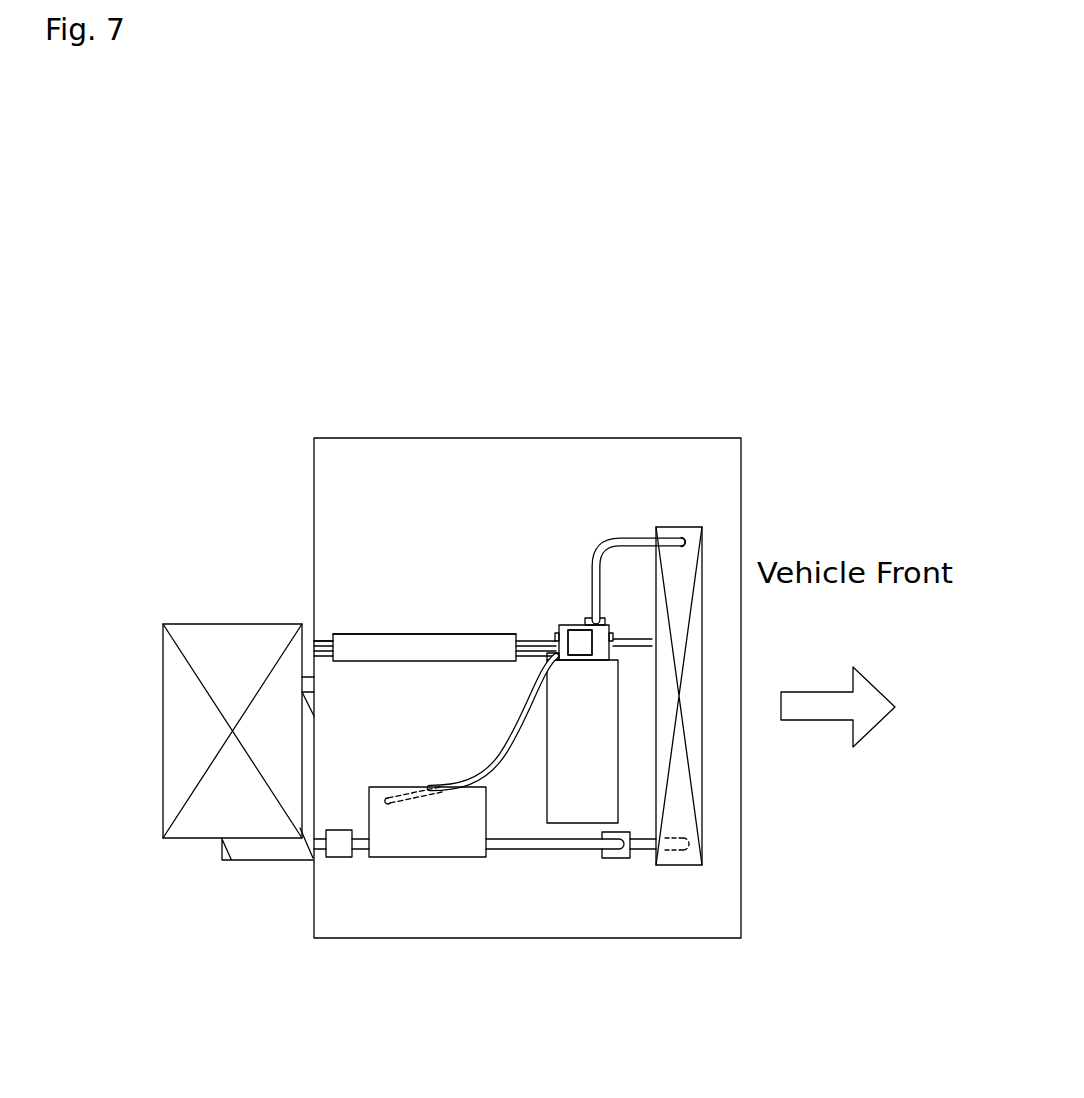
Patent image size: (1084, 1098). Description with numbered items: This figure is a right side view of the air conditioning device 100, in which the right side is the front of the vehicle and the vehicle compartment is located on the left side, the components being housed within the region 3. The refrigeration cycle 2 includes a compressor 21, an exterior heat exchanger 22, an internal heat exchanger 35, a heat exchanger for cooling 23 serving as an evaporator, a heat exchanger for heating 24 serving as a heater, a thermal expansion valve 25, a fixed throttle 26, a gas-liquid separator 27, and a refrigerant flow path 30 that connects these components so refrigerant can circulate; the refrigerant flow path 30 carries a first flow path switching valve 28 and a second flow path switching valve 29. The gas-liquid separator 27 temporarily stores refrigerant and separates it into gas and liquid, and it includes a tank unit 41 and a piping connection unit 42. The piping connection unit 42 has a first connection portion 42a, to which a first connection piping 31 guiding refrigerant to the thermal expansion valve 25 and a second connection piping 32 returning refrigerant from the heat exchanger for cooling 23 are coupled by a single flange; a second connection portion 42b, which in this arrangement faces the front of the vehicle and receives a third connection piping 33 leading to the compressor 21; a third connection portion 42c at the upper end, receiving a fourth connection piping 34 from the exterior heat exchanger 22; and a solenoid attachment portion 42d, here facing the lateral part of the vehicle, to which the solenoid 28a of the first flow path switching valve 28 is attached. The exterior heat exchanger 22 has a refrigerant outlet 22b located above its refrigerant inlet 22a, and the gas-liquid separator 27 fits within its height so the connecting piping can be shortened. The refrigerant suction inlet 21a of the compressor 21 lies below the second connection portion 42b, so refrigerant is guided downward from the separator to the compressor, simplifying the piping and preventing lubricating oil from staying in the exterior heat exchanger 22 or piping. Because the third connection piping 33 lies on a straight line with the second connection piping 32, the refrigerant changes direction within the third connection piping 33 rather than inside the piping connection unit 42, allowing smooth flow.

The air conditioning device 100 is at (745, 421).
The motor compartment 3 is at (360, 483).
The refrigeration cycle 2 is at (553, 527).
The exterior heat exchanger 22 is at (692, 526).
The refrigerant inlet 22a is at (676, 851).
The refrigerant outlet 22b is at (676, 539).
The heat exchanger for cooling 23 is at (192, 825).
The heat exchanger for heating 24 is at (281, 848).
The thermal expansion valve 25 is at (310, 628).
The fixed throttle 26 is at (340, 858).
The gas-liquid separator 27 is at (578, 831).
The first flow path switching valve 28 is at (577, 624).
The solenoid 28a is at (585, 653).
The second flow path switching valve 29 is at (622, 859).
The refrigerant flow path 30 is at (447, 623).
The first connection piping 31 is at (326, 658).
The second connection piping 32 is at (328, 638).
The third connection piping 33 is at (505, 731).
The fourth connection piping 34 is at (633, 540).
The internal heat exchanger 35 is at (378, 633).
The tank unit 41 is at (565, 793).
The piping connection unit 42 is at (548, 609).
The first connection portion 42a is at (556, 632).
The second connection portion 42b is at (612, 627).
The third connection portion 42c is at (568, 626).
The solenoid attachment portion 42d is at (547, 658).
The compressor 21 is at (455, 858).
The refrigerant suction inlet 21a is at (389, 806).